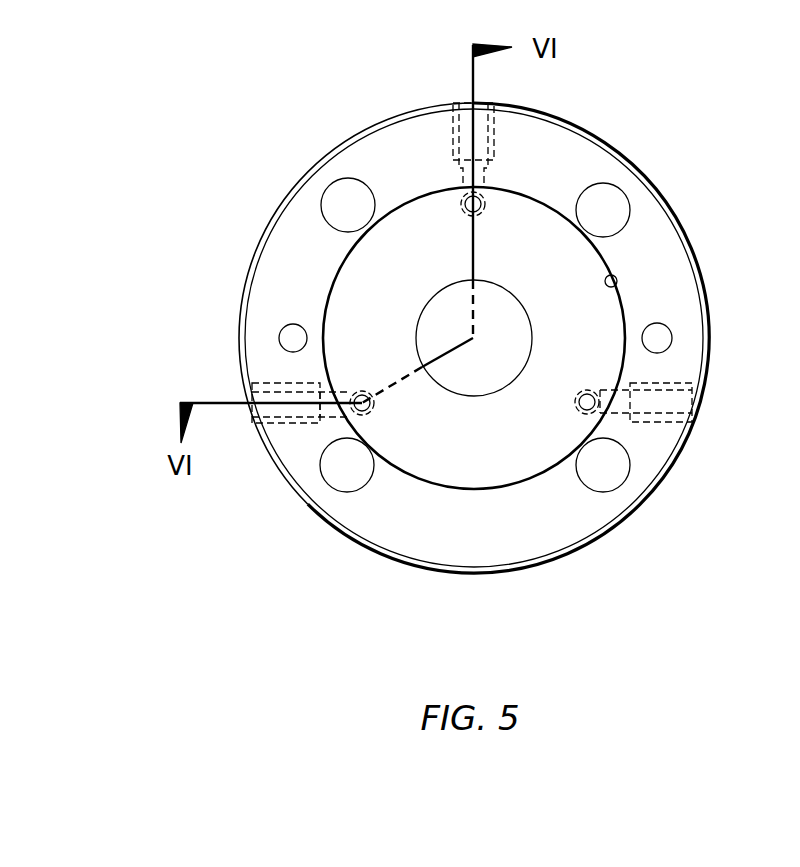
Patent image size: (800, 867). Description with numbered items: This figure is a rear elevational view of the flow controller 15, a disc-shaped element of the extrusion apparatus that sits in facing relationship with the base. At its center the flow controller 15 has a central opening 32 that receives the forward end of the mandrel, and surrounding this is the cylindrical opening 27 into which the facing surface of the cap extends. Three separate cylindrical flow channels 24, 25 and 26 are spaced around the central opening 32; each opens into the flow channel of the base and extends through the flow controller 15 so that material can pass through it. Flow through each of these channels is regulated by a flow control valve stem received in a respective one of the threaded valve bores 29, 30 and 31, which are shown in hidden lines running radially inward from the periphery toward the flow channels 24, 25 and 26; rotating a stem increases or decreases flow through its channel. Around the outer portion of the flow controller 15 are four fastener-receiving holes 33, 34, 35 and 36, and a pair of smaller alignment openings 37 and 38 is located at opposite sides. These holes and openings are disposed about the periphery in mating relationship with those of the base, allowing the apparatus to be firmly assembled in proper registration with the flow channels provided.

The flow controller 15 is at (504, 577).
The cylindrical flow channel 24 is at (465, 208).
The cylindrical flow channel 25 is at (580, 406).
The cylindrical flow channel 26 is at (370, 410).
The cylindrical opening 27 is at (615, 290).
The threaded valve bore 29 is at (463, 98).
The threaded valve bore 30 is at (684, 393).
The threaded valve bore 31 is at (243, 395).
The central opening 32 is at (521, 312).
The fastener-receiving hole 33 is at (327, 190).
The fastener-receiving hole 34 is at (620, 198).
The fastener-receiving hole 35 is at (612, 478).
The fastener-receiving hole 36 is at (330, 478).
The alignment opening 37 is at (283, 336).
The alignment opening 38 is at (665, 341).